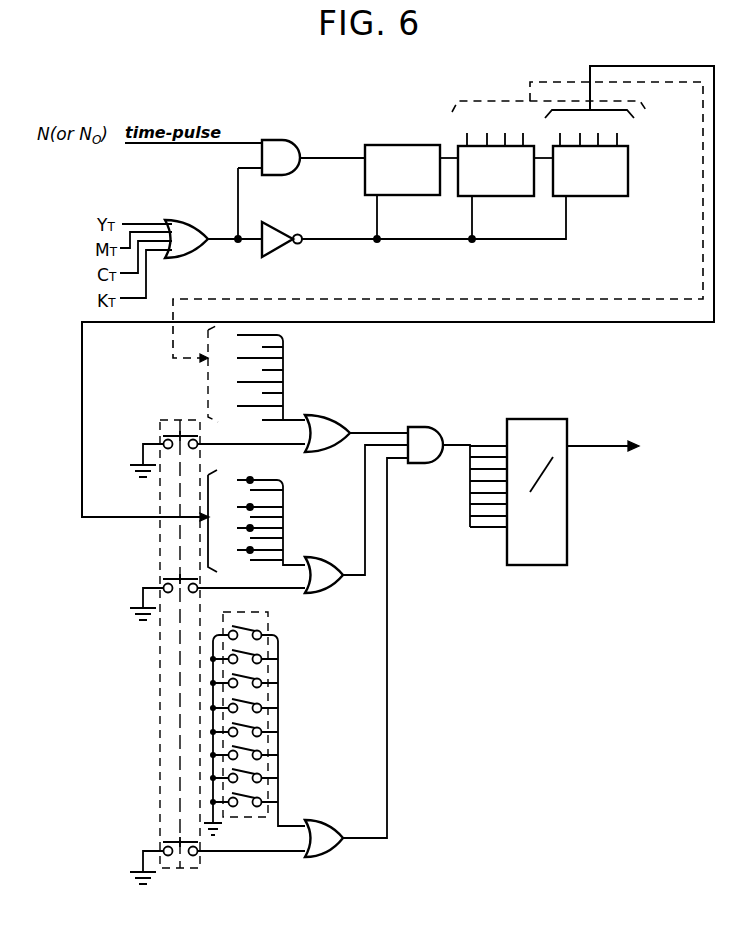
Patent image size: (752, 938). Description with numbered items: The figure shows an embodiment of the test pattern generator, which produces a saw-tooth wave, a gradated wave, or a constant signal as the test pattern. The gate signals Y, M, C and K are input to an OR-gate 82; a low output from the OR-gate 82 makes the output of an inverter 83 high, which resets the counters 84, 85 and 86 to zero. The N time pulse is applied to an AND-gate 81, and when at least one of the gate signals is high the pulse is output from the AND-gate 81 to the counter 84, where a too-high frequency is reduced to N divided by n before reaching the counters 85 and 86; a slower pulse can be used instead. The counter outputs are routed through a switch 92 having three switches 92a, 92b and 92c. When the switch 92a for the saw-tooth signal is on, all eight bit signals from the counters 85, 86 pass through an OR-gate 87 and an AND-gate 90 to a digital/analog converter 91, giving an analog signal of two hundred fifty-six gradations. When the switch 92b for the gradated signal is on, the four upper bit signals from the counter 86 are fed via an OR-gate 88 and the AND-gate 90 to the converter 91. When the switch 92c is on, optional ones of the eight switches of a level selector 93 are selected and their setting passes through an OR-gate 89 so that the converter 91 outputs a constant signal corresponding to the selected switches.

The AND-gate 81 is at (283, 141).
The OR-gate 82 is at (176, 221).
The inverter 83 is at (287, 229).
The counter 84 is at (380, 146).
The counter 85 is at (514, 197).
The counter 86 is at (615, 197).
The OR-gate 87 is at (320, 420).
The OR-gate 88 is at (318, 558).
The OR-gate 89 is at (318, 816).
The AND-gate 90 is at (422, 428).
The digital/analog converter 91 is at (550, 419).
The switch 92 is at (194, 871).
The switch for the saw-tooth signal 92a is at (166, 426).
The switch for the gradated signals 92b is at (167, 578).
The switch for the constant signal 92c is at (171, 838).
The level selector 93 is at (270, 620).